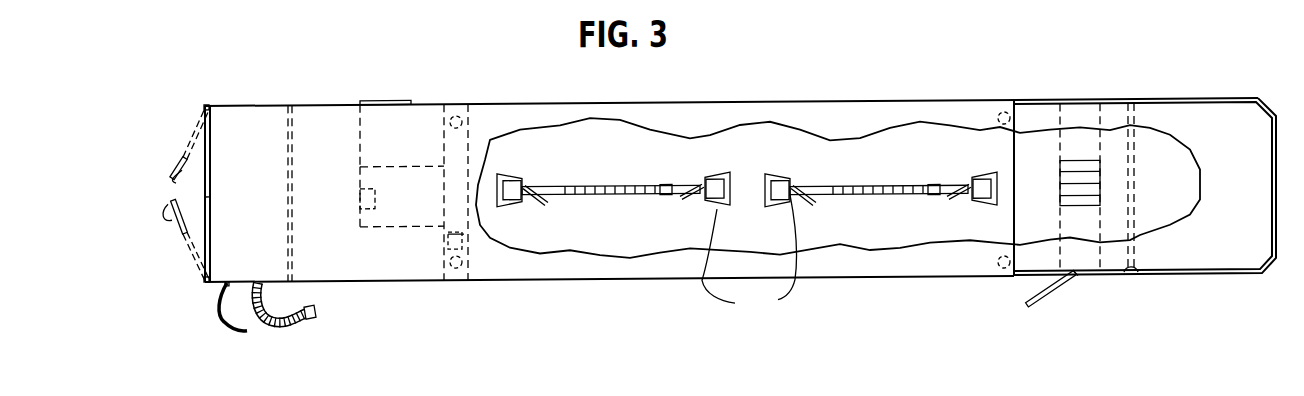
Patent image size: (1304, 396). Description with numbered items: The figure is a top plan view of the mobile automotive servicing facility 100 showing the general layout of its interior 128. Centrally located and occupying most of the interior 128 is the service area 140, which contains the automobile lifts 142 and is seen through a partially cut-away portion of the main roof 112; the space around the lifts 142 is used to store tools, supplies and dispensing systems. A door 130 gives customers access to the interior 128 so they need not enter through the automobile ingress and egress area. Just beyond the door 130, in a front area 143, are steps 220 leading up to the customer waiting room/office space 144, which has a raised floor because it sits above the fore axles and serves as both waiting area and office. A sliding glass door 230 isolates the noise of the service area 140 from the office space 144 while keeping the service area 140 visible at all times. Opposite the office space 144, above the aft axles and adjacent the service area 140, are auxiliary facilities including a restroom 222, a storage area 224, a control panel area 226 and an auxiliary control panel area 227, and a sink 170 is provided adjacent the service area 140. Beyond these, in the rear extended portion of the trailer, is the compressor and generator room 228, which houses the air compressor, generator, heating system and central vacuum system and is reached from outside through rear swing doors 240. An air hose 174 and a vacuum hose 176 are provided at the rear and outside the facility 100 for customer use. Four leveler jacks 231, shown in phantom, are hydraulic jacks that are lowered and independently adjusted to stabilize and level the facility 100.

The mobile automotive servicing facility 100 is at (1004, 100).
The main roof 112 is at (755, 107).
The interior 128 is at (986, 244).
The door 130 is at (1034, 310).
The service area 140 is at (593, 172).
The automobile lifts 142 is at (749, 262).
The front area 143 is at (1036, 118).
The customer waiting room/office space 144 is at (1195, 120).
The sink 170 is at (470, 258).
The air hose 174 is at (240, 336).
The hose 176 is at (312, 320).
The steps 220 is at (1083, 170).
The restroom 222 is at (423, 124).
The storage area 224 is at (320, 116).
The control panel area 226 is at (398, 273).
The auxiliary control panel area 227 is at (397, 102).
The compressor and generator room 228 is at (233, 112).
The sliding glass door 230 is at (1132, 282).
The leveler jacks 231 is at (463, 122).
The rear swing doors 240 is at (172, 216).